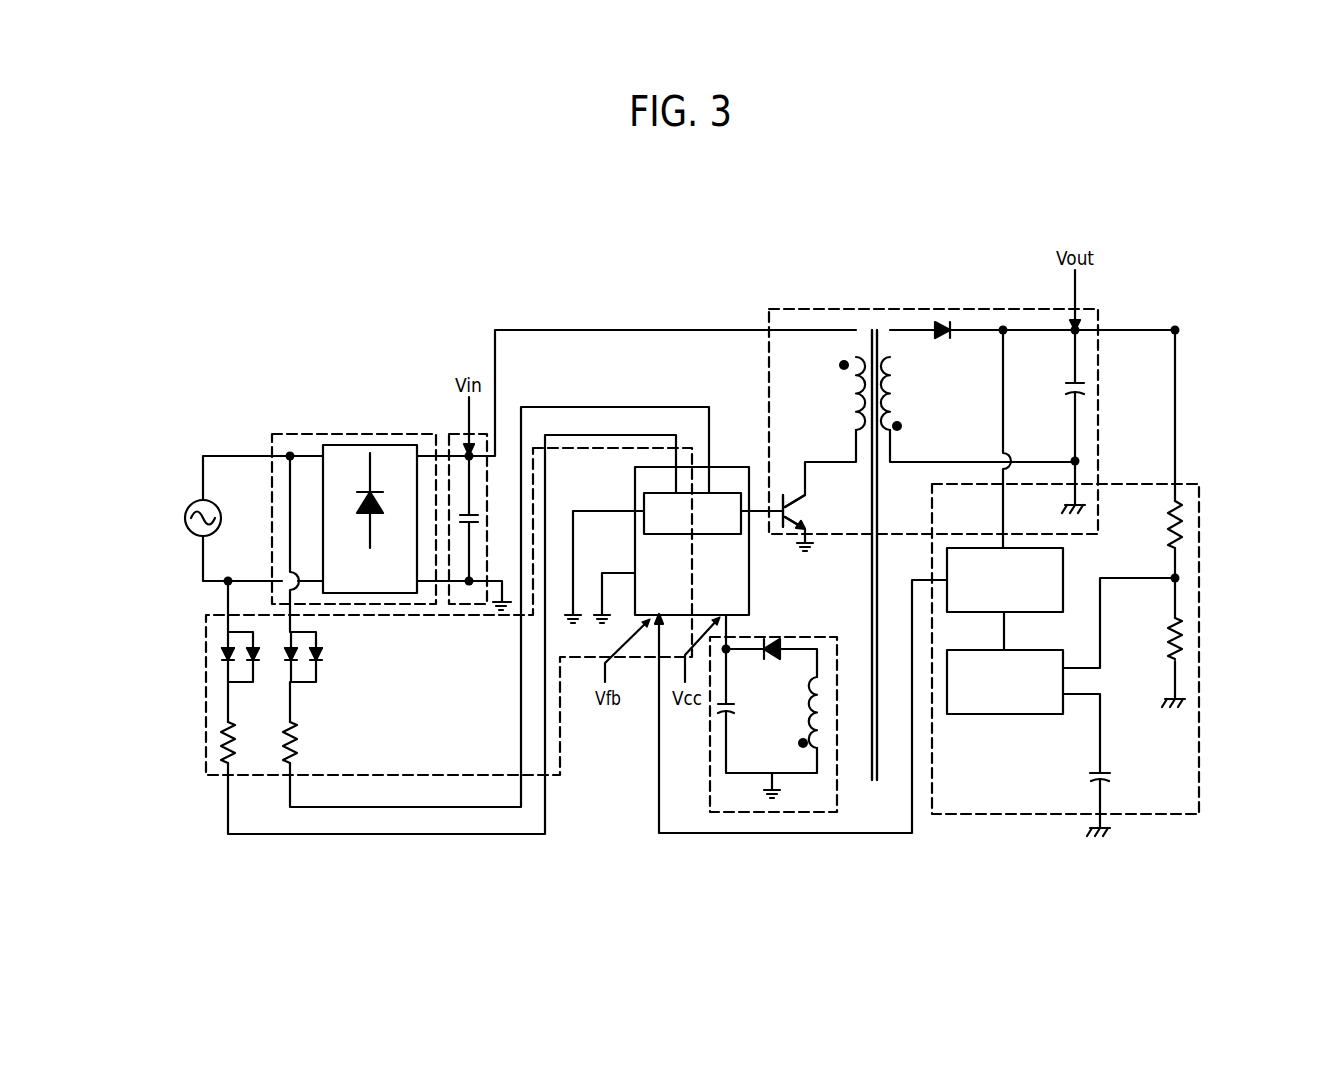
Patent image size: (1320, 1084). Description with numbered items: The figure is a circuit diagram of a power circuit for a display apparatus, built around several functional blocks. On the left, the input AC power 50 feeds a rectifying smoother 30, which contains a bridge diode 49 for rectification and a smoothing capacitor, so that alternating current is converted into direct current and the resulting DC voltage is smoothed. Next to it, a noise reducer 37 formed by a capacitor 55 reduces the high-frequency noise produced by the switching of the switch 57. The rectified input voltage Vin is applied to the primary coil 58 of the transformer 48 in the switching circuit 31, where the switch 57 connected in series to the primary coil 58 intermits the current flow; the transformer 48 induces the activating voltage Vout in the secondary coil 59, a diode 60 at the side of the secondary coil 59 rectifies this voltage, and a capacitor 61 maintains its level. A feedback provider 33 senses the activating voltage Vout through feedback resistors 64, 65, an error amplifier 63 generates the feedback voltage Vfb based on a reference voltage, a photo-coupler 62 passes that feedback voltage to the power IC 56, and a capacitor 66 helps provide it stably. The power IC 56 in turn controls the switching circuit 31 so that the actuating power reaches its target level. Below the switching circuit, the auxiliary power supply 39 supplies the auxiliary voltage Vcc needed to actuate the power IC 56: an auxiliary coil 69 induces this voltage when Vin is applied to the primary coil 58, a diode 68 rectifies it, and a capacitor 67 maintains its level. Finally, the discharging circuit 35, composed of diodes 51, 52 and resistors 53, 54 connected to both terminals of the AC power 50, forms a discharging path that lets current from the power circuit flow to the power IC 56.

The rectifying smoother 30 is at (300, 434).
The switching circuit 31 is at (783, 309).
The feedback provider 33 is at (1020, 814).
The discharging circuit 35 is at (405, 775).
The noise reducer 37 is at (445, 433).
The auxiliary power supply 39 is at (772, 812).
The transformer 48 is at (868, 324).
The bridge diode 49 is at (399, 593).
The input AC power 50 is at (185, 518).
The diode 51 is at (228, 622).
The diode 52 is at (307, 622).
The resistor 53 is at (220, 737).
The resistor 54 is at (301, 737).
The capacitor 55 is at (467, 548).
The power IC 56 is at (635, 487).
The switch 57 is at (783, 493).
The primary coil 58 is at (856, 396).
The secondary coil 59 is at (895, 395).
The diode 60 is at (938, 322).
The capacitor 61 is at (1086, 393).
The photo-coupler 62 is at (1064, 563).
The error amplifier 63 is at (1004, 715).
The feedback resistor 64 is at (1184, 525).
The feedback resistor 65 is at (1184, 636).
The capacitor 66 is at (1110, 776).
The capacitor 67 is at (718, 714).
The diode 68 is at (775, 636).
The auxiliary coil 69 is at (834, 745).